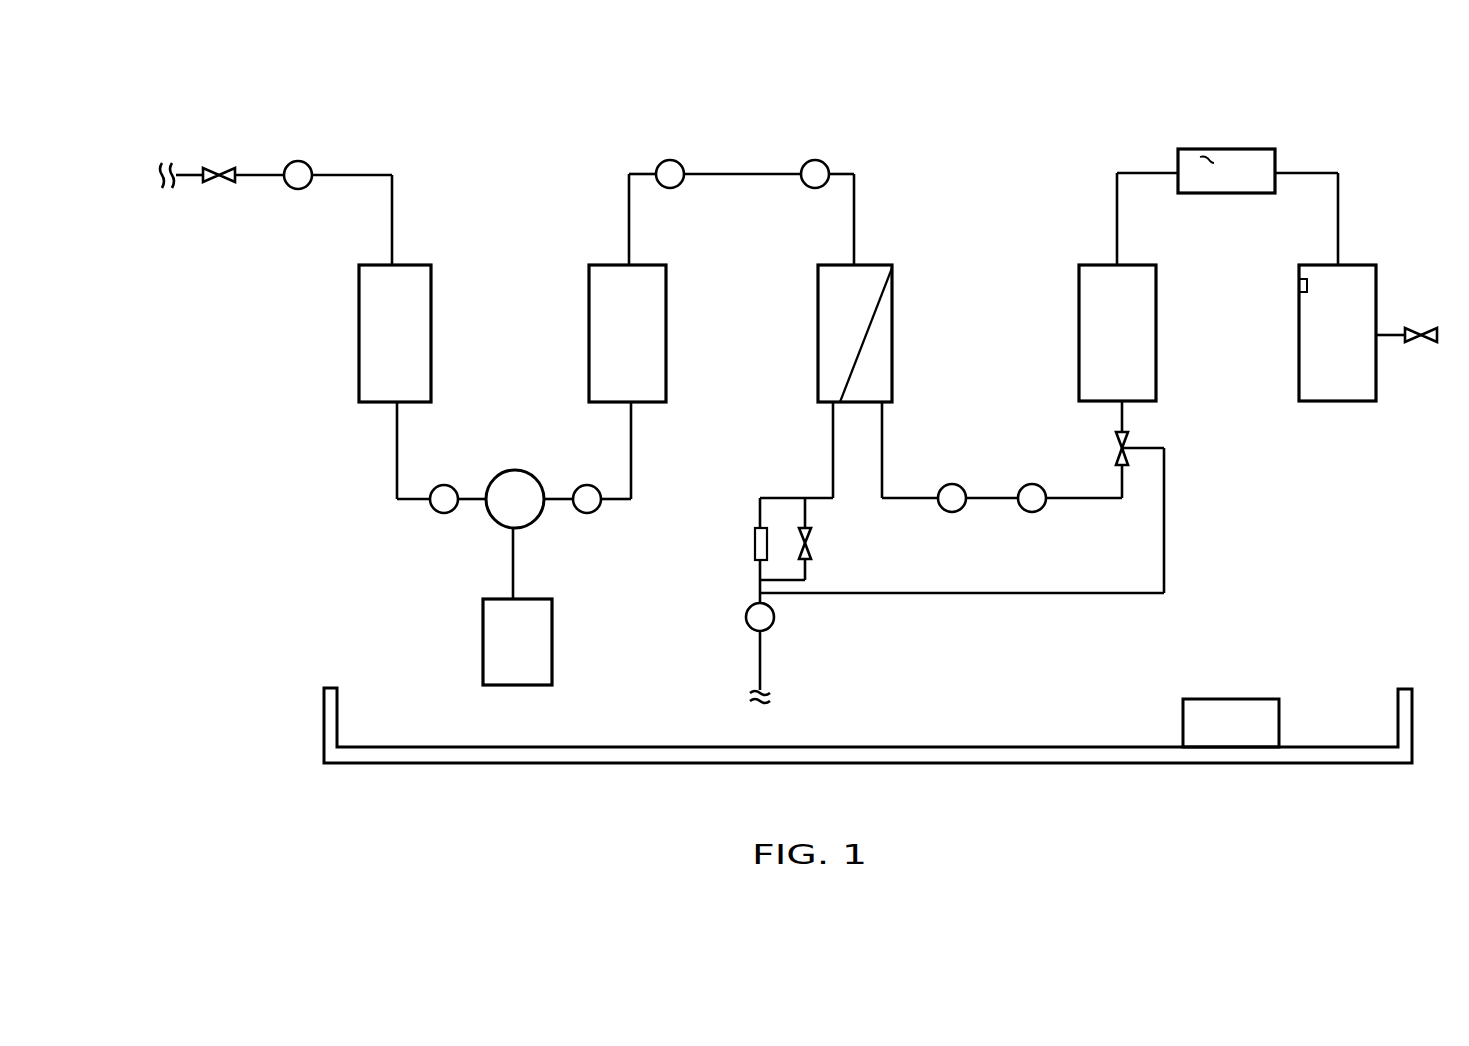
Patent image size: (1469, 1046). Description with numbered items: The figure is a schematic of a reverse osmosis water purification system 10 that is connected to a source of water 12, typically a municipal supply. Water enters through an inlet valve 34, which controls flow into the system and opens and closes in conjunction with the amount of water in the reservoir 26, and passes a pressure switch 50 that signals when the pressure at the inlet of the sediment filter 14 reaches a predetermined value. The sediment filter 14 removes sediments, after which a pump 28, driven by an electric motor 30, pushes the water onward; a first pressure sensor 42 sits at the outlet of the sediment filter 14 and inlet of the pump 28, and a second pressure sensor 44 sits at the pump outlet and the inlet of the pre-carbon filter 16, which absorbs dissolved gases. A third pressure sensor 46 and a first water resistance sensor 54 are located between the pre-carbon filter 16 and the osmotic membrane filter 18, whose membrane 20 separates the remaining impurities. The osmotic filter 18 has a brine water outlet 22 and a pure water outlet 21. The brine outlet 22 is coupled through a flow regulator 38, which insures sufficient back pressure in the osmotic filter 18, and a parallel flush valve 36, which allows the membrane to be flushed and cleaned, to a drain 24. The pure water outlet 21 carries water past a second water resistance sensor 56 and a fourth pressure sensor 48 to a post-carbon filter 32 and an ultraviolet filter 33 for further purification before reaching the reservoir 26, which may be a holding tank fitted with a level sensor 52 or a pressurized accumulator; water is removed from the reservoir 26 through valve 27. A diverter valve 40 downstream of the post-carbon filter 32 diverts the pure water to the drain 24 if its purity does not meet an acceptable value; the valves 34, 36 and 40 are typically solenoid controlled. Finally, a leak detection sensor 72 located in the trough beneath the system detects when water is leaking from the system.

The reverse osmosis water purification system 10 is at (526, 198).
The source of water 12 is at (152, 166).
The sediment filter 14 is at (412, 348).
The pre-carbon filter 16 is at (647, 348).
The osmotic membrane filter 18 is at (862, 315).
The membrane 20 is at (867, 340).
The pure water outlet 21 is at (882, 422).
The brine water outlet 22 is at (833, 437).
The drain 24 is at (782, 707).
The reservoir 26 is at (1354, 348).
The valve 27 is at (1432, 328).
The pump 28 is at (533, 514).
The electric motor 30 is at (536, 655).
The post-carbon filter 32 is at (1135, 348).
The ultraviolet (UV) filter 33 is at (1269, 186).
The inlet valve 34 is at (222, 168).
The flush valve 36 is at (811, 541).
The flow regulator 38 is at (755, 542).
The diverter valve 40 is at (1116, 440).
The first pressure sensor 42 is at (444, 485).
The second pressure sensor 44 is at (584, 485).
The third pressure sensor 46 is at (665, 160).
The fourth pressure sensor 48 is at (1028, 484).
The pressure switch 50 is at (298, 161).
The level sensor 52 is at (1299, 285).
The first water resistance sensor 54 is at (811, 160).
The second water resistance sensor 56 is at (950, 484).
The leak detection sensor 72 is at (1249, 737).